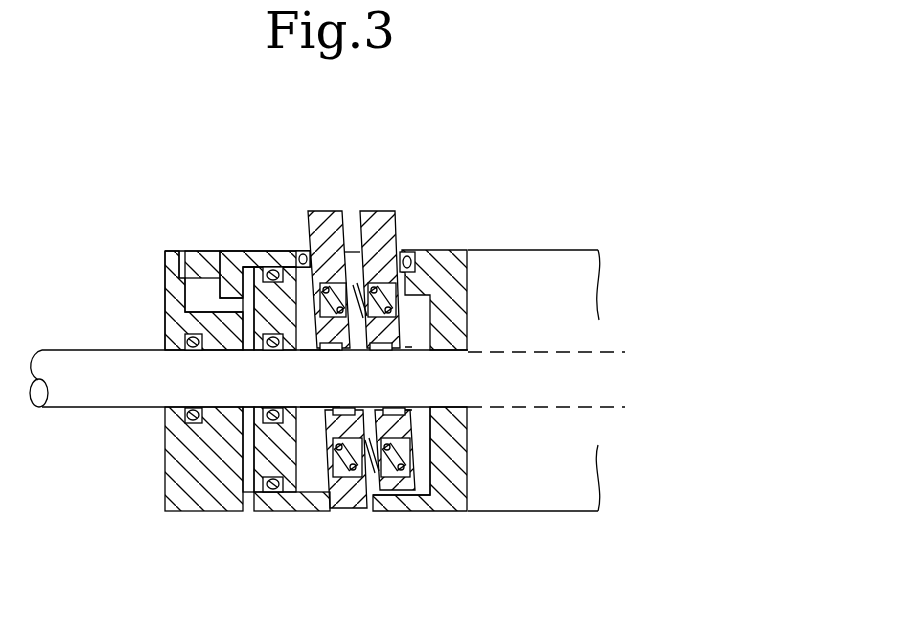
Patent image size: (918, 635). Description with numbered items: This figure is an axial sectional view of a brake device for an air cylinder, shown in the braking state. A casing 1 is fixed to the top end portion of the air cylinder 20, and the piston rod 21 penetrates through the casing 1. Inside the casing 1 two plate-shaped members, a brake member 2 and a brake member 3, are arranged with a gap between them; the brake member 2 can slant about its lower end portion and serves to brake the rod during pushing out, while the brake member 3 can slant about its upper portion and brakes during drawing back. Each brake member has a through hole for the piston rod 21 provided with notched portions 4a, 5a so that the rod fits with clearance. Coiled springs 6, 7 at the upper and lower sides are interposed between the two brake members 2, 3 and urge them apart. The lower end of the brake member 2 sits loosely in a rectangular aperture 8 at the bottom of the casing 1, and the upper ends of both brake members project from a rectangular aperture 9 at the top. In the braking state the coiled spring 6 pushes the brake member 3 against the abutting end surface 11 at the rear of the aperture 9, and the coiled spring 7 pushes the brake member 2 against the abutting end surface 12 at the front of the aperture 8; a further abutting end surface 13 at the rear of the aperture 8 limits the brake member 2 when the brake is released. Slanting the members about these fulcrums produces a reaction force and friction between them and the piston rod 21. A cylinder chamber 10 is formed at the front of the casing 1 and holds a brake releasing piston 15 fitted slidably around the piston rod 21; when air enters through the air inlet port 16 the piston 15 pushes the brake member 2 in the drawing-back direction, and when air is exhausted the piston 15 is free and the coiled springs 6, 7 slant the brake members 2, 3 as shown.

The casing 1 is at (235, 249).
The brake member 2 is at (318, 224).
The brake member 3 is at (380, 228).
The notched portion 4a is at (334, 407).
The notched portion 5a is at (407, 347).
The coiled spring 6 is at (398, 234).
The coiled spring 7 is at (437, 511).
The rectangular aperture 8 is at (330, 509).
The rectangular aperture 9 is at (305, 249).
The cylinder chamber 10 is at (230, 510).
The abutting end surface 11 is at (445, 250).
The abutting end surface 12 is at (323, 500).
The abutting end surface 13 is at (380, 500).
The brake releasing piston 15 is at (250, 510).
The air inlet port 16 is at (190, 249).
The air cylinder 20 is at (570, 249).
The piston rod 21 is at (63, 357).